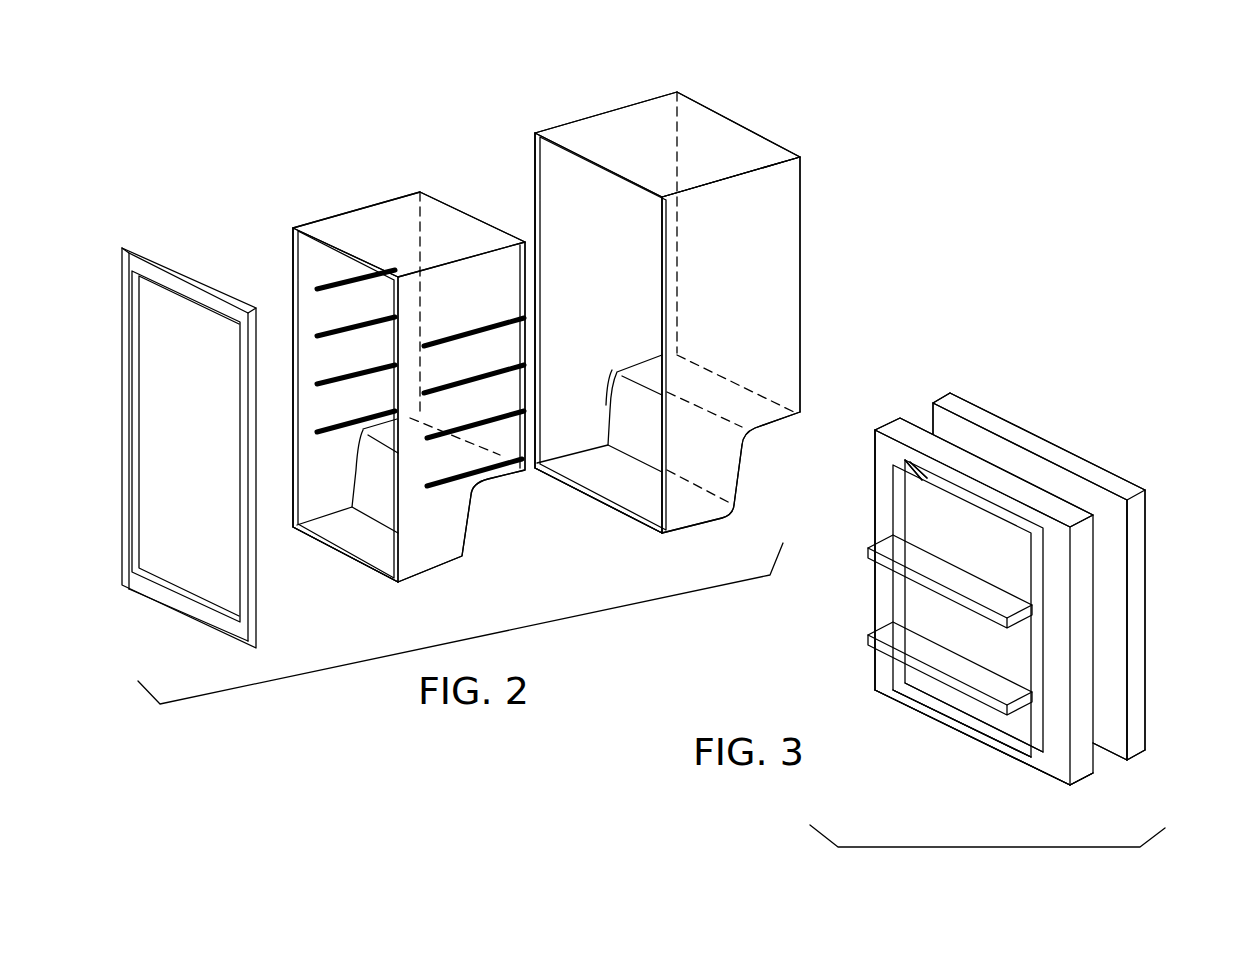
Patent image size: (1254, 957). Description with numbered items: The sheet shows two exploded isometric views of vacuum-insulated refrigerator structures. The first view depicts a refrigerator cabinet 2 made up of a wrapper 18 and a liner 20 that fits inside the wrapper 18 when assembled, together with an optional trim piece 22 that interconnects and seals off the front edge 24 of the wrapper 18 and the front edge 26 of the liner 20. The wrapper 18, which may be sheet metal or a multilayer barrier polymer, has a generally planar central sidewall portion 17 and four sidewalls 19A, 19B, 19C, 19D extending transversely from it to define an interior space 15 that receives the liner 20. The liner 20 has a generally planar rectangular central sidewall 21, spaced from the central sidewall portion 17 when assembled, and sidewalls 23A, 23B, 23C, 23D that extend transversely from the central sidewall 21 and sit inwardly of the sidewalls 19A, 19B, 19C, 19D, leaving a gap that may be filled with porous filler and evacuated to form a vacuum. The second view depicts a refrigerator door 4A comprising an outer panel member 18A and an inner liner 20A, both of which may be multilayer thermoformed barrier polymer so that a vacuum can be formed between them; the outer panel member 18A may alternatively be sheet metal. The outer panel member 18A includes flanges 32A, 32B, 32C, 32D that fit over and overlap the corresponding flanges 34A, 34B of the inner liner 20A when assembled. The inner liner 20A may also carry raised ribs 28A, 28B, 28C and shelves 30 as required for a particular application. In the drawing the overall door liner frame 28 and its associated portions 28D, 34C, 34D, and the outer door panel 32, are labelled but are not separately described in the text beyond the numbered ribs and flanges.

In FIG. 2, the refrigerator cabinet 2 is at (546, 100).
In FIG. 2, the interior space 15 is at (598, 475).
In FIG. 2, the central sidewall portion 17 is at (777, 225).
In FIG. 2, the wrapper 18 is at (748, 128).
In FIG. 3, the outer panel member 18A is at (1152, 583).
In FIG. 2, the sidewall 19A is at (622, 493).
In FIG. 2, the sidewall 19B is at (777, 279).
In FIG. 2, the sidewall 19C is at (620, 100).
In FIG. 2, the sidewall 19D is at (557, 210).
In FIG. 2, the liner 20 is at (360, 208).
In FIG. 3, the inner liner 20A is at (1045, 780).
In FIG. 2, the central sidewall 21 is at (443, 220).
In FIG. 2, the trim piece 22 is at (165, 262).
In FIG. 2, the sidewall 23A is at (370, 552).
In FIG. 2, the sidewall 23B is at (455, 457).
In FIG. 2, the sidewall 23C is at (335, 233).
In FIG. 2, the sidewall 23D is at (313, 410).
In FIG. 2, the front edge 24 is at (555, 208).
In FIG. 2, the front edge 26 is at (288, 300).
In FIG. 3, the inner door liner 28 is at (984, 601).
In FIG. 3, the raised rib 28A is at (918, 707).
In FIG. 3, the raised rib 28B is at (1025, 720).
In FIG. 3, the raised rib 28C is at (893, 458).
In FIG. 3, the left side edge of inner door liner 28D is at (890, 666).
In FIG. 3, the shelves 30 is at (868, 635).
In FIG. 3, the outer door panel 32 is at (1039, 576).
In FIG. 3, the flange 32A is at (1115, 735).
In FIG. 3, the flange 32B is at (1137, 640).
In FIG. 3, the flange 32C is at (1047, 452).
In FIG. 3, the flange 32D is at (933, 423).
In FIG. 3, the flange 34A is at (935, 723).
In FIG. 3, the flange 34B is at (1080, 768).
In FIG. 3, the top mounting bracket 34C is at (967, 467).
In FIG. 3, the left side flange 34D is at (872, 485).
In FIG. 3, the refrigerator door 4A is at (1047, 417).